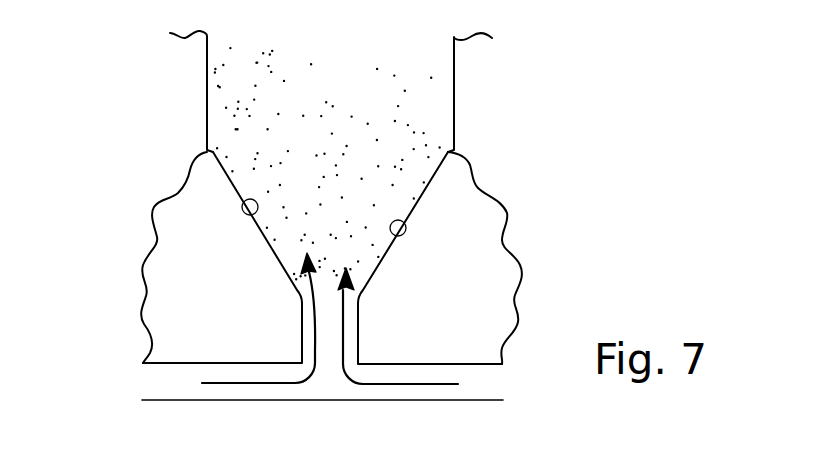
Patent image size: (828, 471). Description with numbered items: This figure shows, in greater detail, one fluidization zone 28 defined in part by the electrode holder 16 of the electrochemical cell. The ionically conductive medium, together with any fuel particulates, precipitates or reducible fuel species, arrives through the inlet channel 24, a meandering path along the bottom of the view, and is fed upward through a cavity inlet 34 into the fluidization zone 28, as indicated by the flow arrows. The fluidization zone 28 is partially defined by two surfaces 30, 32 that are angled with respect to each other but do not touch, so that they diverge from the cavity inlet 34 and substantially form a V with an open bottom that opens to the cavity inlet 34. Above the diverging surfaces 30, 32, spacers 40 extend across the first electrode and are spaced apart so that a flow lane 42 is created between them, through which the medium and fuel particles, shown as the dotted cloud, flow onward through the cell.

The electrode holder 16 is at (438, 323).
The inlet channel 24 is at (488, 392).
The fluidization zone 28 is at (363, 195).
The surface 30 is at (243, 203).
The surface 32 is at (405, 222).
The cavity inlet 34 is at (307, 342).
The spacer 40 is at (207, 98).
The flow lane 42 is at (346, 94).